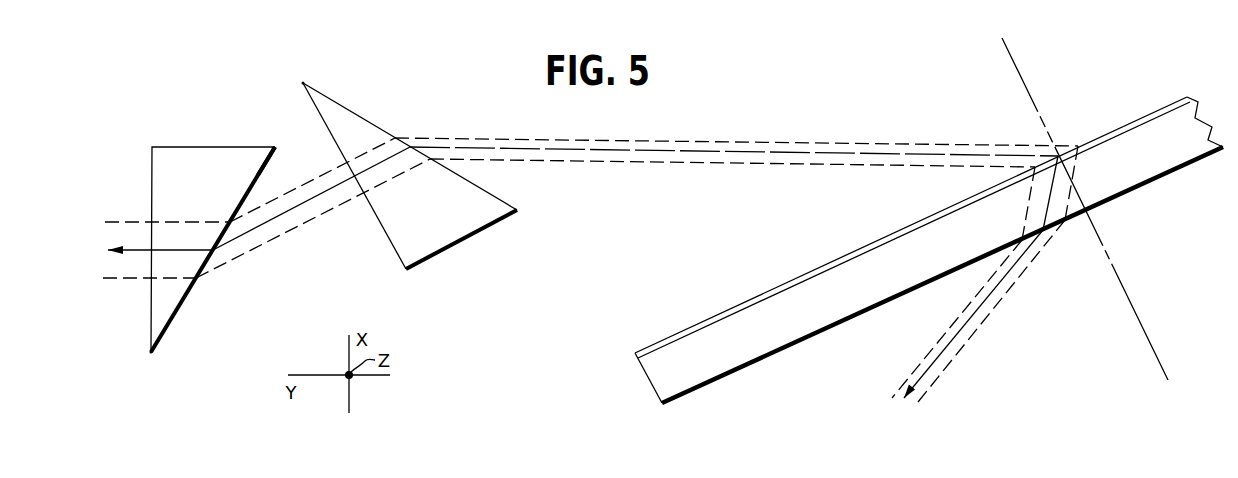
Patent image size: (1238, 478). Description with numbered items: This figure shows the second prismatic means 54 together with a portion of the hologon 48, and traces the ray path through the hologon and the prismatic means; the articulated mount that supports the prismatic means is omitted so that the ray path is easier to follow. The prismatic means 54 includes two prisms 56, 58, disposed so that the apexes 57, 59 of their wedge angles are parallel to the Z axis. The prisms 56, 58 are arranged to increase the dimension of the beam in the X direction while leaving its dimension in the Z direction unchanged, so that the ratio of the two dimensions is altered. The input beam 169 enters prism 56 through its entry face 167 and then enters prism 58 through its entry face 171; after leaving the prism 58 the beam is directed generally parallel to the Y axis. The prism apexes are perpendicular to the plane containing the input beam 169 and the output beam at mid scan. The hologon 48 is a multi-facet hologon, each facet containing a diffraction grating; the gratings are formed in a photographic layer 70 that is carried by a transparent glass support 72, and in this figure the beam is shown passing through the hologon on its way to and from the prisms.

The hologon 48 is at (929, 230).
The second prismatic means 54 is at (227, 244).
The prism 56 is at (416, 153).
The apex of wedge angle 57 is at (303, 83).
The prism 58 is at (172, 297).
The apex of wedge angle 59 is at (151, 356).
The photographic layer 70 is at (723, 312).
The transparent glass support 72 is at (788, 325).
The entry face 167 is at (368, 119).
The input beam 169 is at (700, 152).
The entry face 171 is at (270, 164).